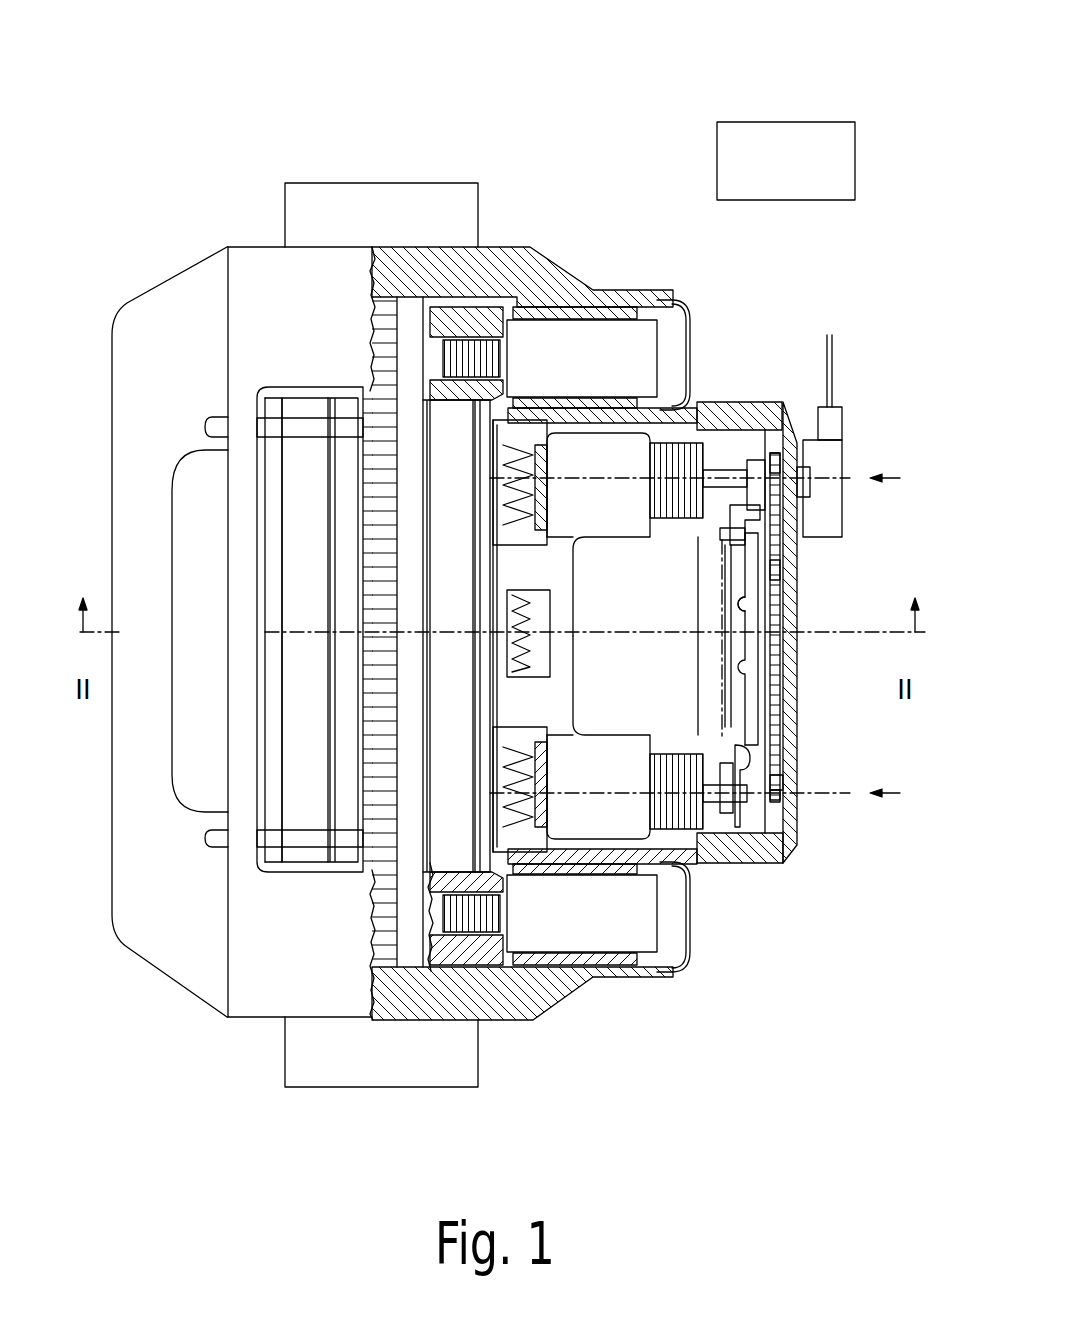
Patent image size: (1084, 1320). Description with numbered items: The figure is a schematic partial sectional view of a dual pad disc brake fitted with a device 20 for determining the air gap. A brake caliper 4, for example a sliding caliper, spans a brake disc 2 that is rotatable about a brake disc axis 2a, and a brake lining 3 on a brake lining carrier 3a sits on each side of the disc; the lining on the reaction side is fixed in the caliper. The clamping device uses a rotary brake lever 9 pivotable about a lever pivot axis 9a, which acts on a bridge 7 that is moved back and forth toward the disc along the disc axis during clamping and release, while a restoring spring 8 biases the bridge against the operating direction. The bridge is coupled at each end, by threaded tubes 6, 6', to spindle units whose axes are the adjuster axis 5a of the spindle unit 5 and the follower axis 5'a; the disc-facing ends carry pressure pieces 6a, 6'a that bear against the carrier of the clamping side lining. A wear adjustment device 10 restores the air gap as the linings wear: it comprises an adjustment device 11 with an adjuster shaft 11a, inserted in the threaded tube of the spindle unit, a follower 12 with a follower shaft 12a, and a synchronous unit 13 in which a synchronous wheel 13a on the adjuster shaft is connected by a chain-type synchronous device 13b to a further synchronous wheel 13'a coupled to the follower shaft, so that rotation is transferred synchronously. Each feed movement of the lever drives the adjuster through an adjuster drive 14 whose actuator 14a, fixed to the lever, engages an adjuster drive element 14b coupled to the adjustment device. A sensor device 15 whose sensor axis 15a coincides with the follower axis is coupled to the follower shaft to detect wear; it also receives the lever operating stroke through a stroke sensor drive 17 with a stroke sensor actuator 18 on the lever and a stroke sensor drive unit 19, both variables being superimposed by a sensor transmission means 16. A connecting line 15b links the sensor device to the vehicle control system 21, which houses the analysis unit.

The brake disc 2 is at (385, 960).
The brake disc axis 2a is at (300, 632).
The brake lining 3 is at (458, 405).
The brake lining carrier 3a is at (483, 407).
The brake caliper 4 is at (510, 1000).
The spindle unit 5 is at (704, 636).
The adjuster axis 5a is at (818, 793).
The follower axis 5'a is at (617, 364).
The threaded tube 6 is at (602, 690).
The threaded tube 6' is at (666, 585).
The pressure piece 6a is at (503, 880).
The pressure piece 6'a is at (497, 426).
The bridge 7 is at (593, 810).
The restoring spring 8 is at (508, 635).
The brake lever 9 is at (746, 648).
The lever pivot axis 9a is at (746, 600).
The wear adjustment device 10 is at (764, 910).
The adjustment device 11 is at (708, 835).
The adjuster shaft 11a is at (783, 783).
The follower 12 is at (697, 383).
The follower shaft 12a is at (752, 515).
The synchronous unit 13 is at (803, 516).
The synchronous wheel 13a is at (778, 800).
The further synchronous wheel 13'a is at (775, 404).
The synchronous device 13b is at (776, 573).
The adjuster drive 14 is at (752, 733).
The actuator 14a is at (728, 690).
The adjuster drive element 14b is at (740, 762).
The sensor device 15 is at (850, 440).
The sensor axis 15a is at (838, 487).
The connecting line 15b is at (833, 350).
The sensor transmission means 16 is at (782, 440).
The stroke sensor drive 17 is at (740, 447).
The stroke sensor actuator 18 is at (740, 530).
The stroke sensor drive unit 19 is at (752, 512).
The device for determining an air gap 20 is at (697, 72).
The vehicle control system 21 is at (790, 135).